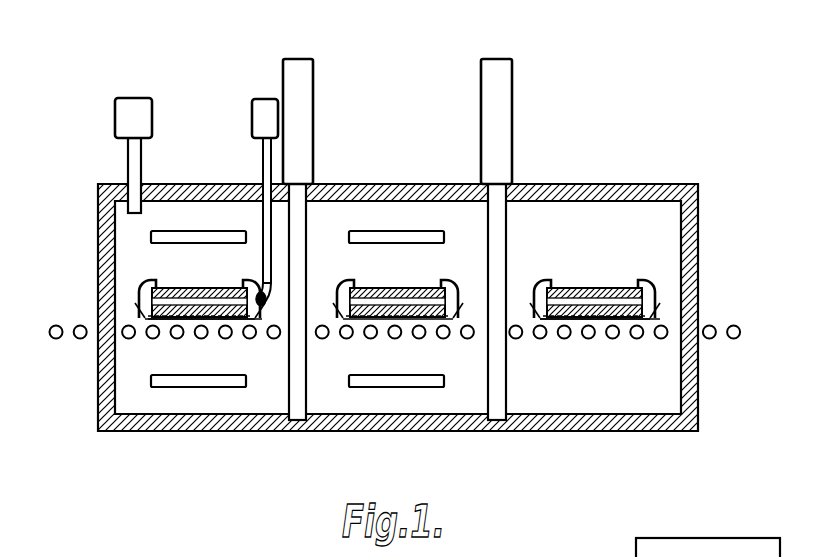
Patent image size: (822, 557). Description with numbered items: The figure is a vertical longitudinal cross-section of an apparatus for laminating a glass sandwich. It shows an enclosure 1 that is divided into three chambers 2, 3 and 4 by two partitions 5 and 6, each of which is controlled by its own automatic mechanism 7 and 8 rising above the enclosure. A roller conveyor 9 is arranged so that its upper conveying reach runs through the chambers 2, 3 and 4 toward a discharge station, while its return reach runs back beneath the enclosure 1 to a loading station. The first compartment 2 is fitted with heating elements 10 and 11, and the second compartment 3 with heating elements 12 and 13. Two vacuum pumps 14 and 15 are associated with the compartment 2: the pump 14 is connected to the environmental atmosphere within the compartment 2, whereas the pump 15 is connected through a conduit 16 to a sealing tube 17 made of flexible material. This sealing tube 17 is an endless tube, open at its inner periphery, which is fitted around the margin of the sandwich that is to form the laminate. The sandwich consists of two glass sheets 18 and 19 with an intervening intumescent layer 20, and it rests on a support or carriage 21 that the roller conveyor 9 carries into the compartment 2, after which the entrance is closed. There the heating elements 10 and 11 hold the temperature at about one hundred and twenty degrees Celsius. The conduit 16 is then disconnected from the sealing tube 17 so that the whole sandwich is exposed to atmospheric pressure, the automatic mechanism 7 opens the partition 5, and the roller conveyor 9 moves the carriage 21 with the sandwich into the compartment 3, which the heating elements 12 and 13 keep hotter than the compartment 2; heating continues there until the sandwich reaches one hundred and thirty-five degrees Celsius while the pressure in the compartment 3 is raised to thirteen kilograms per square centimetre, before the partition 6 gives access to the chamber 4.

The enclosure 1 is at (545, 430).
The chamber 2 is at (175, 220).
The chamber 3 is at (457, 230).
The chamber 4 is at (620, 228).
The partition 5 is at (310, 233).
The partition 6 is at (510, 232).
The automatic mechanism 7 is at (313, 78).
The automatic mechanism 8 is at (512, 66).
The roller conveyor 9 is at (79, 339).
The heating element 10 is at (153, 238).
The heating element 11 is at (195, 390).
The heating element 12 is at (393, 230).
The heating element 13 is at (425, 387).
The vacuum pump 14 is at (130, 98).
The vacuum pump 15 is at (263, 98).
The conduit 16 is at (263, 235).
The sealing tube 17 is at (140, 295).
The glass sheet 18 is at (620, 290).
The glass sheet 19 is at (620, 323).
The intumescent layer 20 is at (600, 322).
The carriage 21 is at (264, 312).